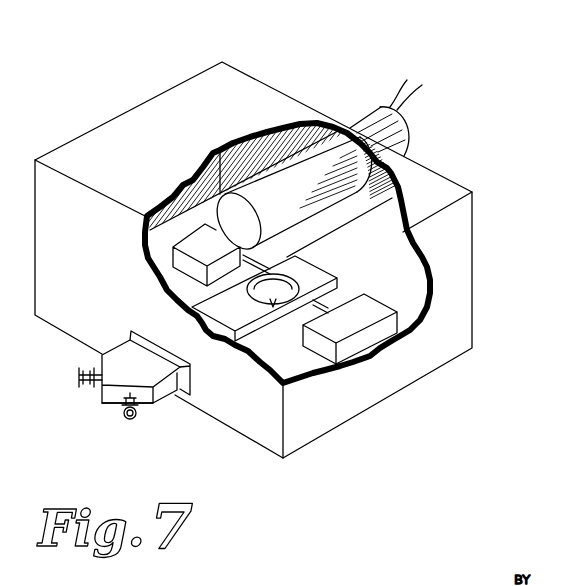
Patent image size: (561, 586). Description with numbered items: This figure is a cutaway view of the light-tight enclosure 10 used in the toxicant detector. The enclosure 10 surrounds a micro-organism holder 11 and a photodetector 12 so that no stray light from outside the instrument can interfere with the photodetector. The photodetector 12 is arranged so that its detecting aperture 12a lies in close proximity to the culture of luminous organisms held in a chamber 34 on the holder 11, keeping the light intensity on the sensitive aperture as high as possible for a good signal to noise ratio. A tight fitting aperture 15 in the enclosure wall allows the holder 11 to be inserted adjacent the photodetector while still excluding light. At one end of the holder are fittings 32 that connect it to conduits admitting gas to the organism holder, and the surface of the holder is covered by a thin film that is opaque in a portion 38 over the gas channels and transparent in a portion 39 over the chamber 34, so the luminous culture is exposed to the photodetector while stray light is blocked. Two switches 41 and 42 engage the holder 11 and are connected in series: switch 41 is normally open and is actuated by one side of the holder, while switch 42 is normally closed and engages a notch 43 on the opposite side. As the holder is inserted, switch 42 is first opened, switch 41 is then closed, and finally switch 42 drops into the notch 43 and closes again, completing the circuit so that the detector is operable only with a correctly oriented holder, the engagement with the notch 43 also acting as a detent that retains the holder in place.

The light-tight enclosure 10 is at (482, 258).
The micro-organism holder 11 is at (160, 405).
The photodetector 12 is at (360, 106).
The detecting aperture 12a is at (303, 215).
The tight fitting aperture 15 is at (131, 333).
The fittings 32 is at (78, 380).
The chamber 34 is at (327, 273).
The opaque portion 38 is at (124, 354).
The transparent portion 39 is at (340, 278).
The switch 41 is at (317, 341).
The switch 42 is at (190, 233).
The notch 43 is at (265, 262).